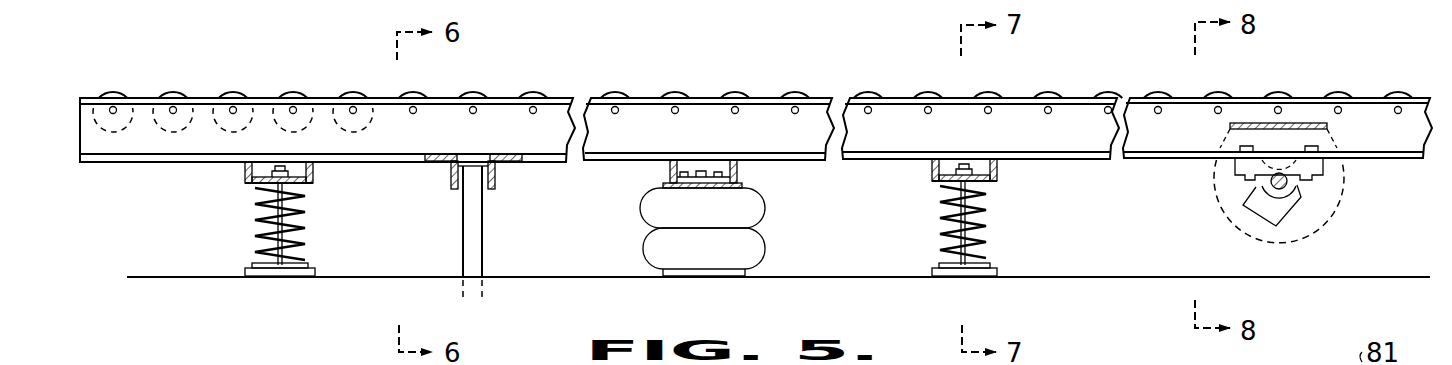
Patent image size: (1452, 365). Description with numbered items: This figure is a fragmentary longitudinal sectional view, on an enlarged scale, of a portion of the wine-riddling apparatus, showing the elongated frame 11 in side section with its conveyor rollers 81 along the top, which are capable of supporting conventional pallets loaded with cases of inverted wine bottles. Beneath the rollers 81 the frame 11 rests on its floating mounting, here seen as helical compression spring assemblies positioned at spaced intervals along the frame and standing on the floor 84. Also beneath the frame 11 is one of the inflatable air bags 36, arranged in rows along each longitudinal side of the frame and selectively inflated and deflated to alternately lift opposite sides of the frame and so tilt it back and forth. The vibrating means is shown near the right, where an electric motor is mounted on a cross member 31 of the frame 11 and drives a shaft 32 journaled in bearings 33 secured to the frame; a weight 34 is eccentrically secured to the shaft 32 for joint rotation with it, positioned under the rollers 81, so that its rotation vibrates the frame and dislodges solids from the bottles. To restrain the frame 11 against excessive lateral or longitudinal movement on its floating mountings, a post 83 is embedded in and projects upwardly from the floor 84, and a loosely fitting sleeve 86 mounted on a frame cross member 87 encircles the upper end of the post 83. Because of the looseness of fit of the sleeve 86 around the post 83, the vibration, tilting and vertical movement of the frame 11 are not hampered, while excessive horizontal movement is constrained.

The frame 11 is at (183, 169).
The cross member 31 is at (1327, 126).
The shaft 32 is at (1262, 182).
The bearings 33 is at (1302, 190).
The weight 34 is at (1263, 197).
The inflatable air bags 36 is at (760, 247).
The conveyor rollers 81 is at (291, 92).
The posts 83 is at (477, 234).
The floor 84 is at (545, 276).
The sleeves 86 is at (495, 180).
The frame cross members 87 is at (506, 155).